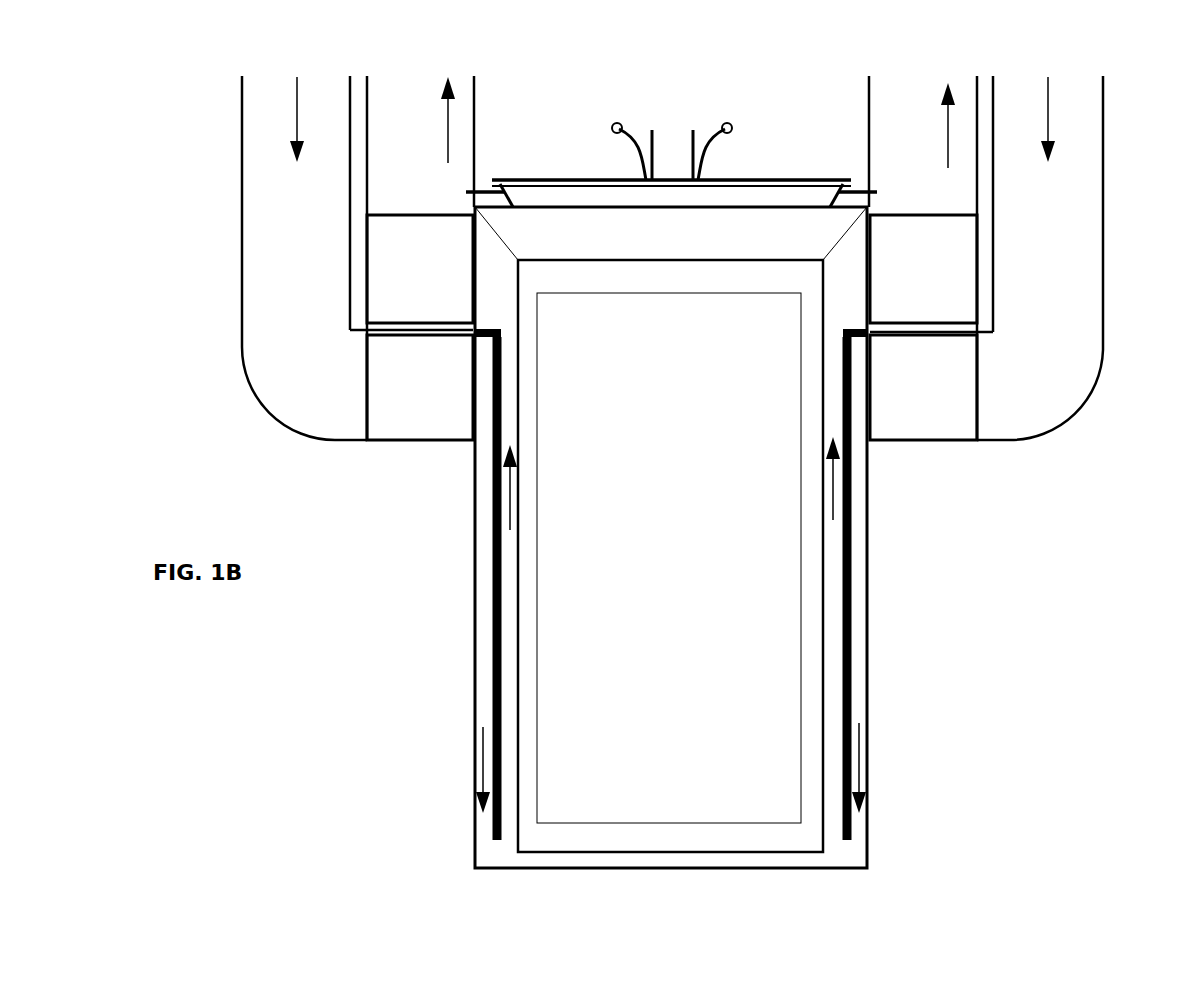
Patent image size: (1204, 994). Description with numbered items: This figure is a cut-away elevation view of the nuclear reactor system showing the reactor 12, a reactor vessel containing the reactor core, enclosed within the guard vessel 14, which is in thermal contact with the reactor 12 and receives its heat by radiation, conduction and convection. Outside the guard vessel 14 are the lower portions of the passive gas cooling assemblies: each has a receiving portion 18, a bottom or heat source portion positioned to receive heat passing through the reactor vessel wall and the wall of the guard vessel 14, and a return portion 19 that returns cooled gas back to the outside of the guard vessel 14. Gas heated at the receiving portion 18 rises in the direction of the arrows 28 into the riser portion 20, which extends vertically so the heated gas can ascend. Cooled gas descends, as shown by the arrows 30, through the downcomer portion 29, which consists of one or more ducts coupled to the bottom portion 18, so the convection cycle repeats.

The reactor 12 is at (684, 570).
The guard vessel 14 is at (518, 700).
The receiving portion 18 is at (493, 287).
The return portion 19 is at (483, 542).
The riser portion 20 is at (406, 108).
The arrows indicating rising gas 28 is at (448, 130).
The downcomer portion 29 is at (284, 210).
The arrows indicating descending gas 30 is at (297, 118).